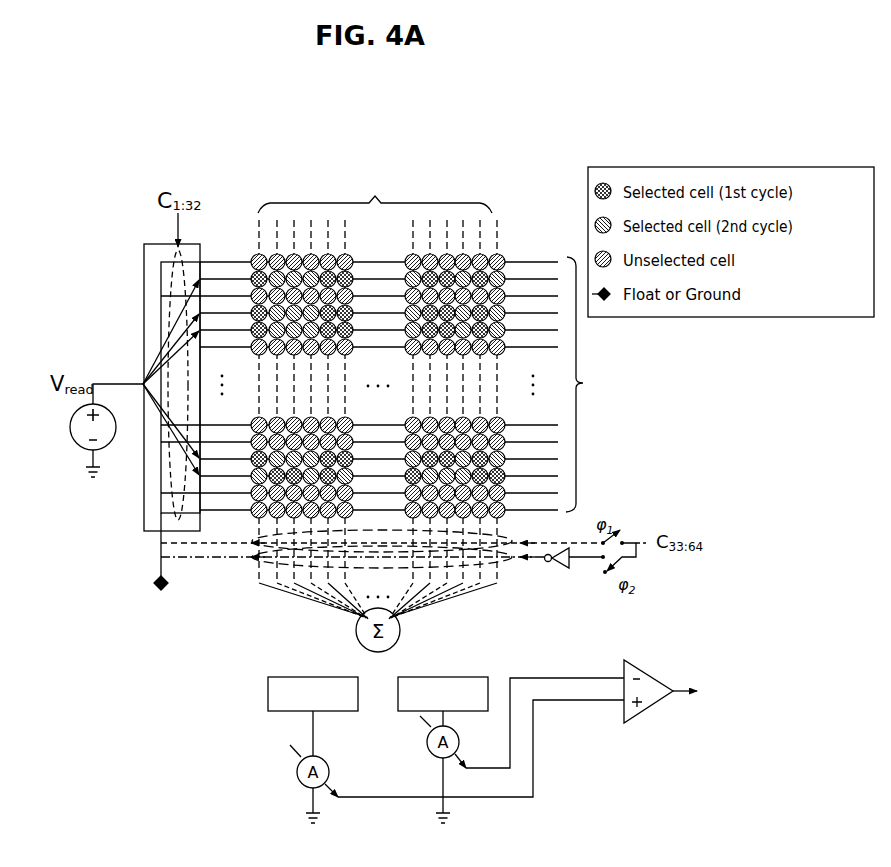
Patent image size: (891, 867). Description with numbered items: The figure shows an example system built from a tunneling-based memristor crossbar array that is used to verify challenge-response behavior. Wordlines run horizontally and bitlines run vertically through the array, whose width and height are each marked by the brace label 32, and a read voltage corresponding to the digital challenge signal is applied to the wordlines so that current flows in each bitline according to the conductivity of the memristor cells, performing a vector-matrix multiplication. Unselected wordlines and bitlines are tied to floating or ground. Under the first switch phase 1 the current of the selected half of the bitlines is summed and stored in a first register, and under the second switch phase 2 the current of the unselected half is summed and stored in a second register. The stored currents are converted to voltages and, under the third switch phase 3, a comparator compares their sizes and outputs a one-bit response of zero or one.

The number of cells per row / column 32 is at (434, 344).
The first-phase register path (Register1 and ammeter) 1 is at (365, 649).
The second-phase register path (Register2 and ammeter) 2 is at (411, 675).
The third-phase comparator 3 is at (648, 670).